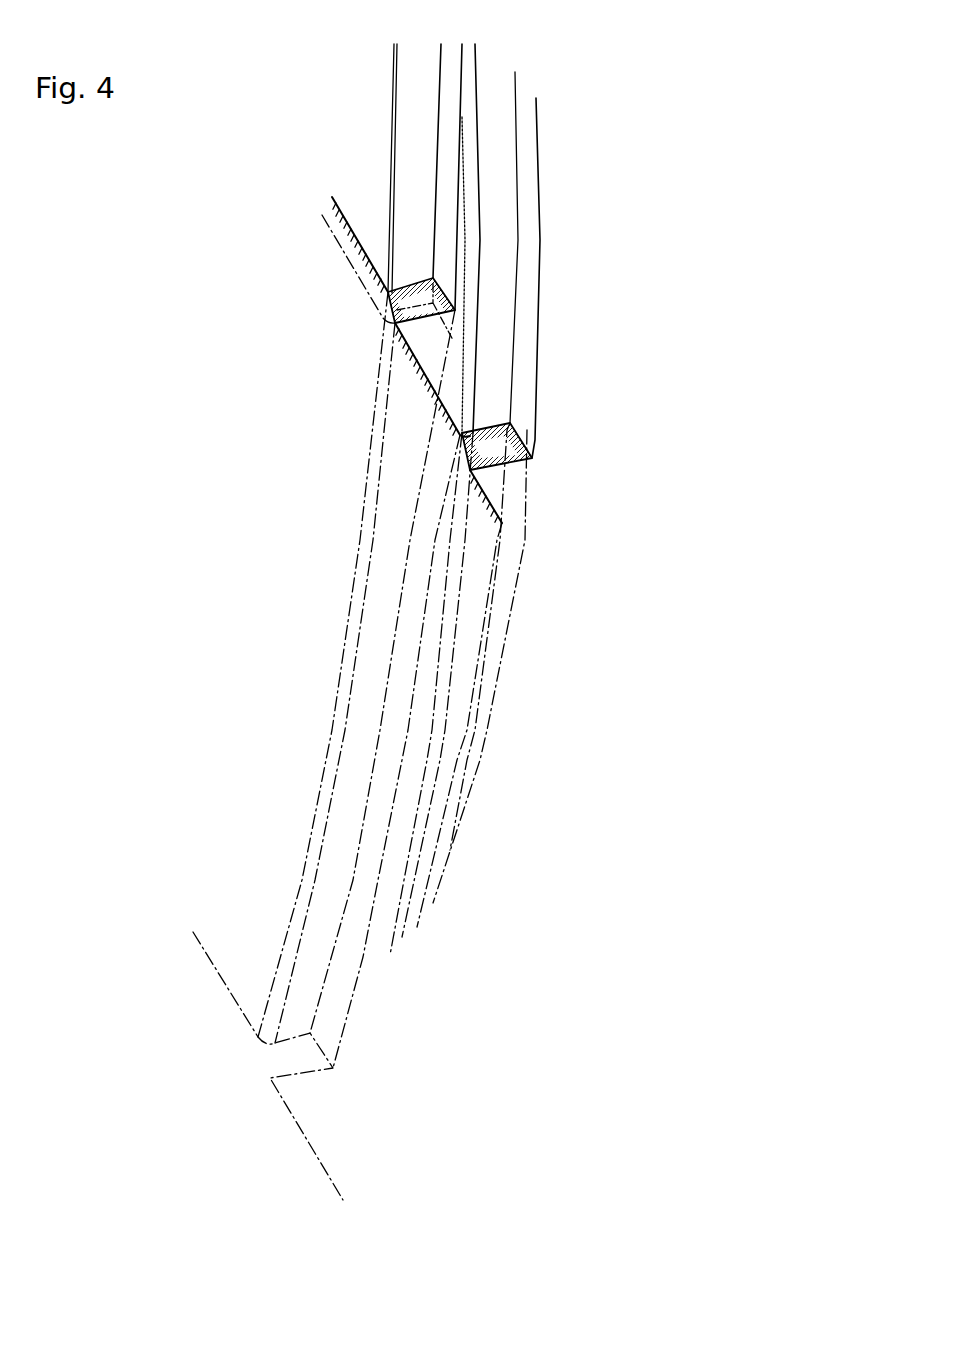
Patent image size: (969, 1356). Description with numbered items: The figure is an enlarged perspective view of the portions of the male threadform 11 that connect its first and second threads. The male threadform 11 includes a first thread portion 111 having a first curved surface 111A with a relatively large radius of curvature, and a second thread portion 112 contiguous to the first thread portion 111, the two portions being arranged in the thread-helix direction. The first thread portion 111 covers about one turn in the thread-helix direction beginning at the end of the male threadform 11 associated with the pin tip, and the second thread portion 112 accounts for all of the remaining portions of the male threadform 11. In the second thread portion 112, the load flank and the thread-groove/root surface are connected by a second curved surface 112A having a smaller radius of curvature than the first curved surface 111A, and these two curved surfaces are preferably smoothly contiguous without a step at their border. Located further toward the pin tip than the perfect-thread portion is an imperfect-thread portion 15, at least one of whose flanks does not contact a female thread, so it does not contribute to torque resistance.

The male threadform 11 is at (447, 283).
The first thread portion 111 is at (528, 223).
The first curved surface 111A is at (468, 358).
The second thread portion 112 is at (418, 100).
The second curved surface 112A is at (393, 177).
The imperfect-thread portion 15 is at (484, 715).